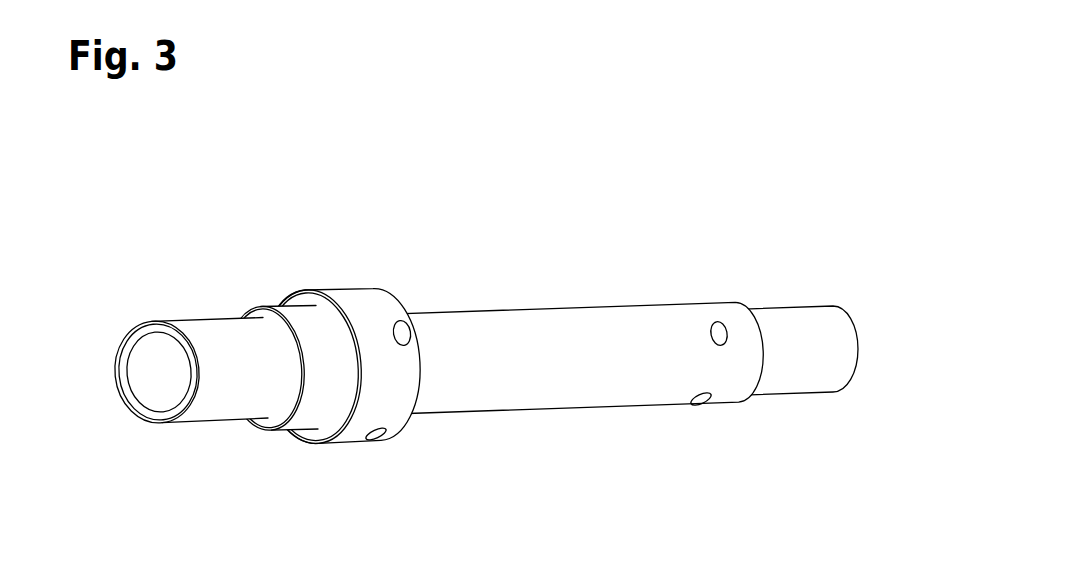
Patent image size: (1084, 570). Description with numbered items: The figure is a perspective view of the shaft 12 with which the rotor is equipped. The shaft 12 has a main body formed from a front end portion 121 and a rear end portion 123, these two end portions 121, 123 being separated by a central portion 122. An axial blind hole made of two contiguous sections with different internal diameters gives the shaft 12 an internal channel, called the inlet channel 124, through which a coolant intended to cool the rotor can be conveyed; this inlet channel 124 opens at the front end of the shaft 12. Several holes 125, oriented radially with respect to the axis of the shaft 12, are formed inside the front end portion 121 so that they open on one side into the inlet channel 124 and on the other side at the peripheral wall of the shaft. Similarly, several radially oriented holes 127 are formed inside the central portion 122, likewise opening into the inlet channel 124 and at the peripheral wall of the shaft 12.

The shaft 12 is at (481, 336).
The front end portion 121 is at (195, 320).
The central portion 122 is at (571, 306).
The rear end portion 123 is at (783, 307).
The inlet channel 124 is at (133, 386).
The holes 125 is at (410, 334).
The holes 127 is at (703, 406).